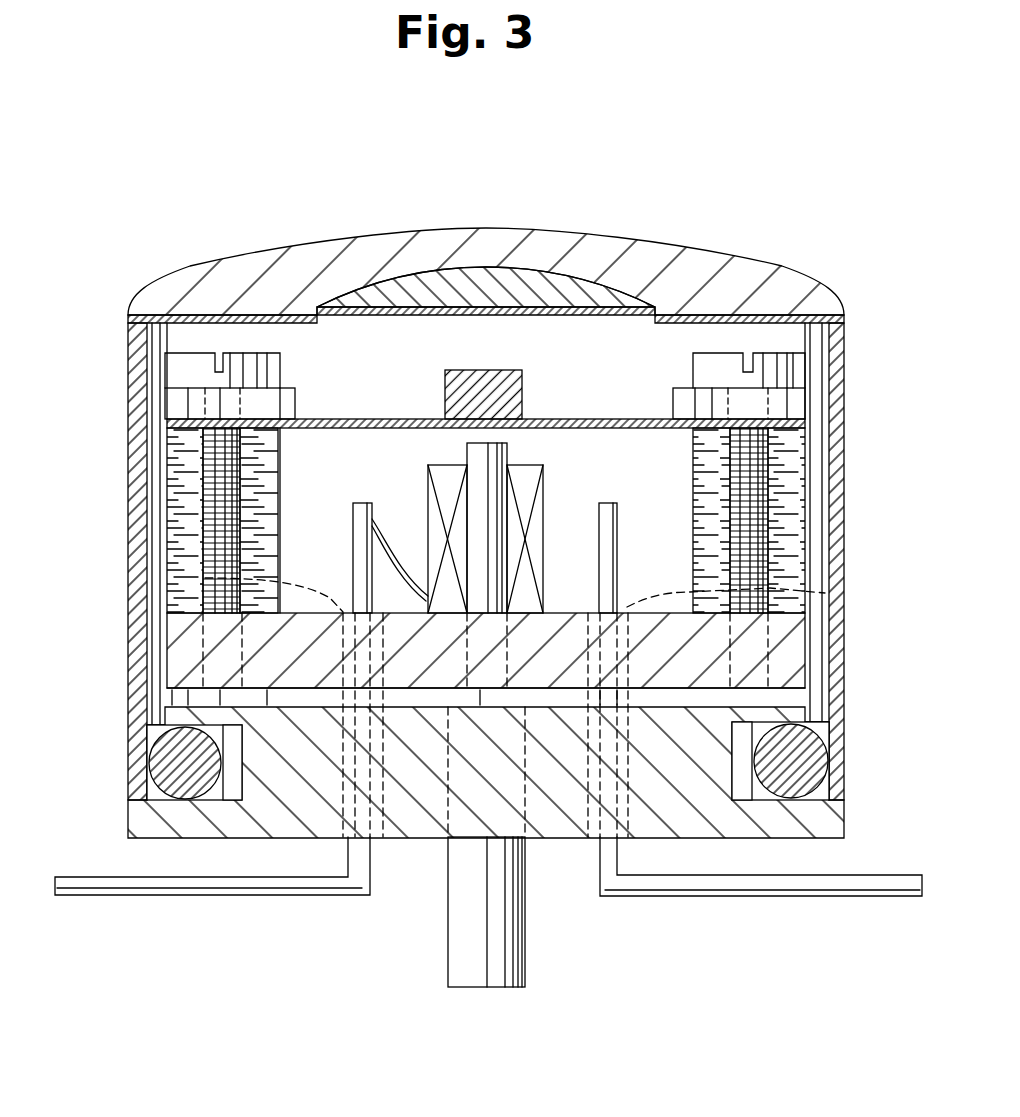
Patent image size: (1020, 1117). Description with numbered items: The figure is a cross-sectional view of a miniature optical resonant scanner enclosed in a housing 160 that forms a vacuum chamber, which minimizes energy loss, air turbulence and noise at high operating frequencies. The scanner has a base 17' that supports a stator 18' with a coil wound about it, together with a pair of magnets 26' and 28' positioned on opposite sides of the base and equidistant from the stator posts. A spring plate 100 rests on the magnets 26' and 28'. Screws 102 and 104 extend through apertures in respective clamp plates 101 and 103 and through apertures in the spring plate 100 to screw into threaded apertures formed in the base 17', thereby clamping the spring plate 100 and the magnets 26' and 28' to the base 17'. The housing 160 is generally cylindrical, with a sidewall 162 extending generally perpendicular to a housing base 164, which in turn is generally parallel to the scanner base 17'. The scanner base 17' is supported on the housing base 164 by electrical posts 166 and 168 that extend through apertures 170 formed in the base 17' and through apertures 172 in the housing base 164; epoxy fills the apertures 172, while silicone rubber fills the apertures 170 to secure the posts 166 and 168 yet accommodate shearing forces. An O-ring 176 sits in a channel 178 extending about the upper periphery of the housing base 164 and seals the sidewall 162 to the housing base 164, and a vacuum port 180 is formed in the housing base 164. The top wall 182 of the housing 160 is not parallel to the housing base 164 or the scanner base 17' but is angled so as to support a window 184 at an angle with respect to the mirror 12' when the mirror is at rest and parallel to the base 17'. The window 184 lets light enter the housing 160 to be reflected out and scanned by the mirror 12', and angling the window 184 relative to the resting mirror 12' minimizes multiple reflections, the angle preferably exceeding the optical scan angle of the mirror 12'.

The spring plate 100 is at (368, 418).
The mirror 12' is at (491, 296).
The window 184 is at (573, 278).
The top wall 182 is at (667, 253).
The housing 160 is at (499, 242).
The screw 102 is at (183, 374).
The clamp plate 101 is at (183, 412).
The stator 18' is at (298, 555).
The magnet 28' is at (166, 520).
The electrical post 166 is at (353, 553).
The aperture 170 is at (178, 583).
The screw 104 is at (800, 370).
The clamp plate 103 is at (797, 407).
The magnet 26' is at (807, 520).
The electrical post 168 is at (618, 535).
The sidewall 162 is at (845, 570).
The base 17' is at (542, 652).
The O-ring 176 is at (813, 748).
The channel 178 is at (825, 791).
The housing base 164 is at (148, 822).
The aperture 172 is at (345, 850).
The vacuum port 180 is at (510, 960).